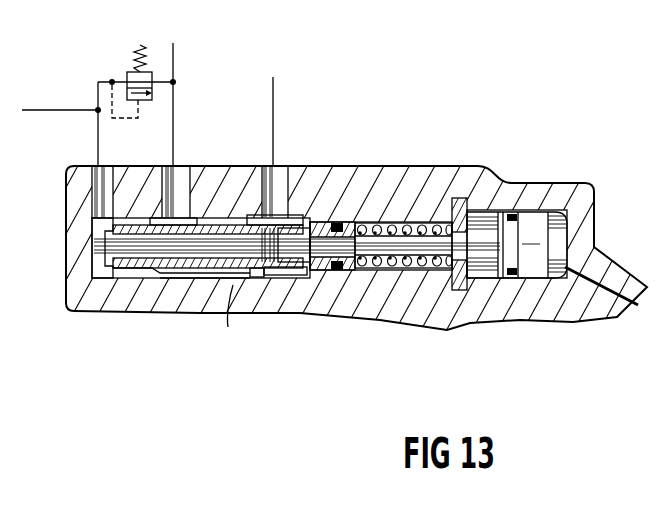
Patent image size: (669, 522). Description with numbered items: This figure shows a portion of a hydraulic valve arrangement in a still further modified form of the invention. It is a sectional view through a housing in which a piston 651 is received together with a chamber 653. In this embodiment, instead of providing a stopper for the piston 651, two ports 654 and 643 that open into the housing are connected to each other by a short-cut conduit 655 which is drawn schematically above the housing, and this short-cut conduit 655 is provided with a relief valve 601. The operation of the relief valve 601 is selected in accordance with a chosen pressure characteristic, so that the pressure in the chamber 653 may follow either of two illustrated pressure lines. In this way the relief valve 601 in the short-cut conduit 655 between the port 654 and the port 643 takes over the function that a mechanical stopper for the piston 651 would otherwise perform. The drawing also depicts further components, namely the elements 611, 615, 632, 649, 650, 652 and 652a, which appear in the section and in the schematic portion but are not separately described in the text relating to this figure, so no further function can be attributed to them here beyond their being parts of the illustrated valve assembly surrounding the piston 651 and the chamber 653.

The relief valve 601 is at (128, 74).
The pressure line 611 is at (274, 122).
The pilot line 615 is at (176, 52).
The valve housing 632 is at (596, 295).
The port 643 is at (182, 176).
The passage 649 is at (198, 280).
The spring 650 is at (410, 225).
The piston 651 is at (532, 222).
The sleeve 652 is at (178, 275).
The sleeve port 652a is at (256, 276).
The chamber 653 is at (92, 256).
The port 654 is at (98, 170).
The short-cut conduit 655 is at (98, 131).